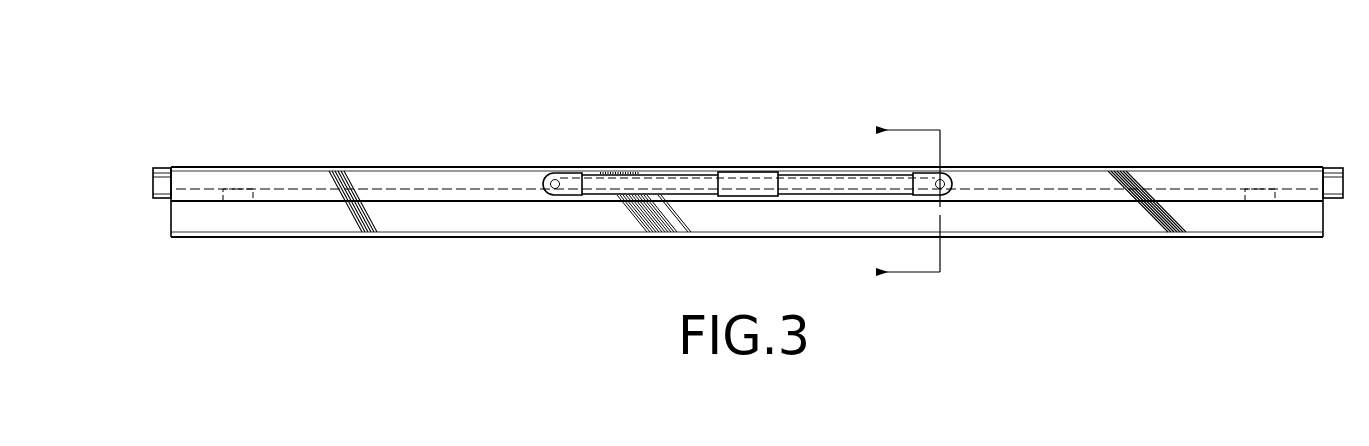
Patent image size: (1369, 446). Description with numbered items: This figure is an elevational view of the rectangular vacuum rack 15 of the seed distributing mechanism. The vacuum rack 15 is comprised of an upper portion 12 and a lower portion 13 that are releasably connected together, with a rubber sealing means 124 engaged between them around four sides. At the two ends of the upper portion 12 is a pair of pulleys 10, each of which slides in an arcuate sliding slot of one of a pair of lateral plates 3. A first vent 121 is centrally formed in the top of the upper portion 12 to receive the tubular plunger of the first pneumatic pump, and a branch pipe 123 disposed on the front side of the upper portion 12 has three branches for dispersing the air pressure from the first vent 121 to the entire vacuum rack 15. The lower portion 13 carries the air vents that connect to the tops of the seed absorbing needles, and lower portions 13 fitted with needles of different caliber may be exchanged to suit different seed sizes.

The pulley 10 is at (166, 180).
The upper portion 12 is at (398, 166).
The lower portion 13 is at (258, 237).
The vacuum rack 15 is at (475, 143).
The first vent 121 is at (753, 183).
The branch pipe 123 is at (662, 172).
The rubber sealing means 124 is at (232, 198).
The lateral plate 3 is at (896, 202).